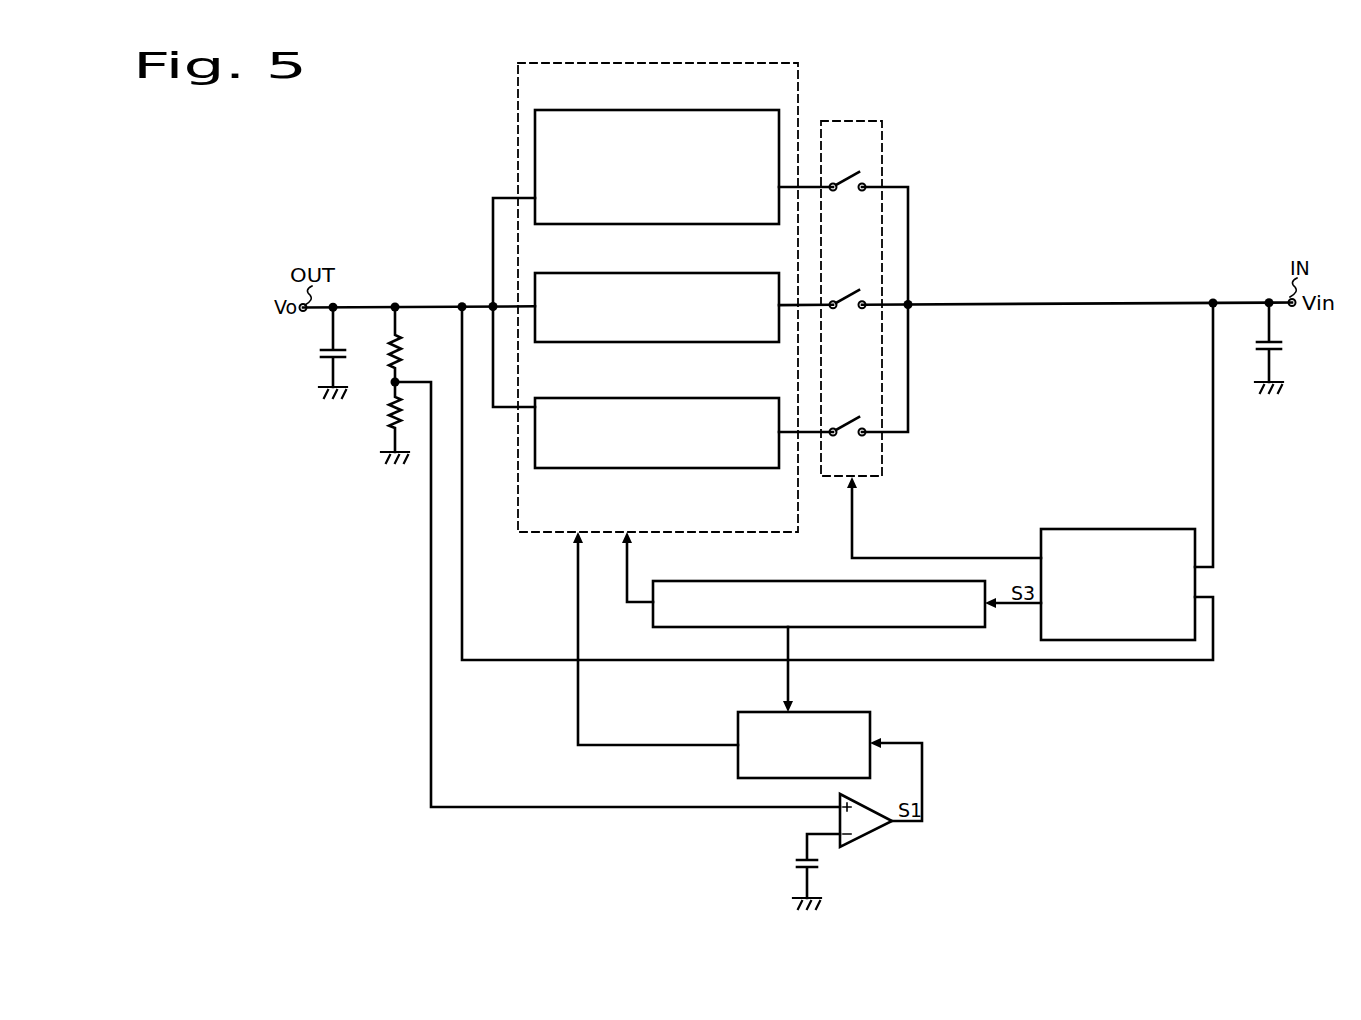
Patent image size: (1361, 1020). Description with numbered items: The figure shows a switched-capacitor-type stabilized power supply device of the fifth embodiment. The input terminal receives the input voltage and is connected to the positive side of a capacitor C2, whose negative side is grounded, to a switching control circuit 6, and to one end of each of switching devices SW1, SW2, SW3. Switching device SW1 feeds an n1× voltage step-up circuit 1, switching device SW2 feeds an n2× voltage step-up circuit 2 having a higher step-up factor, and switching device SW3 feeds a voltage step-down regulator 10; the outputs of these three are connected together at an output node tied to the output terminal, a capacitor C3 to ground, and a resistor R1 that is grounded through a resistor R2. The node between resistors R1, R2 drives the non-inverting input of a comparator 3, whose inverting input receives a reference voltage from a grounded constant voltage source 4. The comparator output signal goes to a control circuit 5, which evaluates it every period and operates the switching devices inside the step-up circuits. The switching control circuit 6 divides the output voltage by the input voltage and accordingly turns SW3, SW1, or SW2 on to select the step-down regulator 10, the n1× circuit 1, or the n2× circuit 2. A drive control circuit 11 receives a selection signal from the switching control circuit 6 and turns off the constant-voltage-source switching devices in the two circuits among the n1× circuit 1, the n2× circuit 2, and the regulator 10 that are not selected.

The voltage step-down regulator 10 is at (633, 110).
The n1× voltage step-up circuit 1 is at (633, 273).
The n2× voltage step-up circuit 2 is at (633, 398).
The switching control circuit 6 is at (1120, 524).
The drive control circuit 11 is at (803, 579).
The control circuit 5 is at (822, 707).
The comparator 3 is at (868, 832).
The constant voltage source 4 is at (822, 865).
The capacitor C3 is at (316, 357).
The capacitor C2 is at (1285, 347).
The resistor R1 is at (382, 351).
The resistor R2 is at (384, 412).
The switching device SW1 is at (851, 286).
The switching device SW2 is at (845, 421).
The switching device SW3 is at (851, 169).